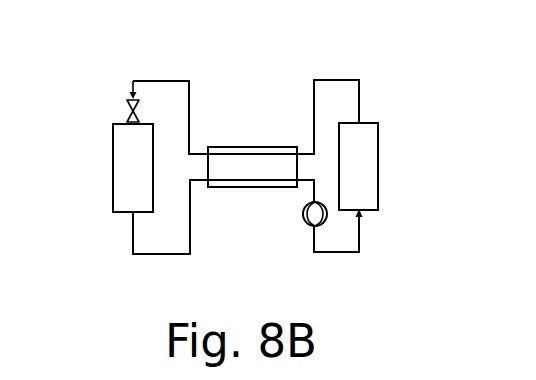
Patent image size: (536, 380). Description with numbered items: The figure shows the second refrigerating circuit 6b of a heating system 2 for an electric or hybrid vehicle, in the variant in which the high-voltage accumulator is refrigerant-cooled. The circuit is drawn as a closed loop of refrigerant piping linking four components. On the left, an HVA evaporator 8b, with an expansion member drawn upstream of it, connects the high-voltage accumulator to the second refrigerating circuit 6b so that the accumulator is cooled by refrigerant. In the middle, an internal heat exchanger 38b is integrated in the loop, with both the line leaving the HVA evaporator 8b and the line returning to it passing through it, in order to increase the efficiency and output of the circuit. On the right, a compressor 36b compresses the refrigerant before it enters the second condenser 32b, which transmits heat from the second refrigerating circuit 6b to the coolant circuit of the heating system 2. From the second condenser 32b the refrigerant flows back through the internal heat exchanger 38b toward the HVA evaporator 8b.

The heating system 2 is at (70, 49).
The second refrigerating circuit 6b is at (93, 104).
The HVA evaporator 8b is at (133, 168).
The second condenser 32b is at (378, 178).
The compressor 36b is at (303, 208).
The internal heat exchanger 38b is at (234, 147).